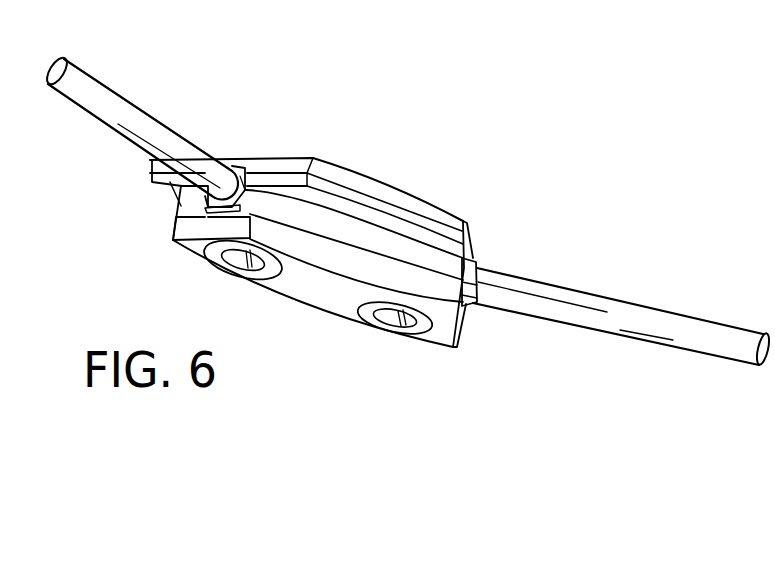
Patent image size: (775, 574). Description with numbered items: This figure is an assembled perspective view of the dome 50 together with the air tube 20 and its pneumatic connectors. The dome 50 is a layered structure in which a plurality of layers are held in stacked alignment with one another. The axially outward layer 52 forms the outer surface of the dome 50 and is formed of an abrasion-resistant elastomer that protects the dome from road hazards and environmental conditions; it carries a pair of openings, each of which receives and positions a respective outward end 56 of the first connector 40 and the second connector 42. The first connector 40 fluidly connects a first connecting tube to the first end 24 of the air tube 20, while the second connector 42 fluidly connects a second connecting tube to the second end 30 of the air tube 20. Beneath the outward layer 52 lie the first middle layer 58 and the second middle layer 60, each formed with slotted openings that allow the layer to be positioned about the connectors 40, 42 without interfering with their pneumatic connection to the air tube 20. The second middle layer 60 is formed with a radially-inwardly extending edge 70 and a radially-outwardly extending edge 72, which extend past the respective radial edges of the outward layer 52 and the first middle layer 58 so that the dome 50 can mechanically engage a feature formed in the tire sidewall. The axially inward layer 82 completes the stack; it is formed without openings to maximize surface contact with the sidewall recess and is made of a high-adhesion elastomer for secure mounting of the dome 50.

The air tube 20 is at (670, 310).
The first end of the air tube 24 is at (497, 280).
The second end of the air tube 30 is at (207, 160).
The first pneumatic fitting or connector 40 is at (474, 258).
The second pneumatic fitting or connector 42 is at (202, 228).
The dome 50 is at (511, 170).
The axially outward layer 52 is at (438, 345).
The outward end of connector 56 is at (247, 268).
The first middle layer 58 is at (174, 213).
The second middle layer 60 is at (150, 177).
The radially-inwardly extending edge 70 is at (331, 198).
The radially-outwardly extending edge 72 is at (167, 193).
The axially inward layer 82 is at (277, 160).